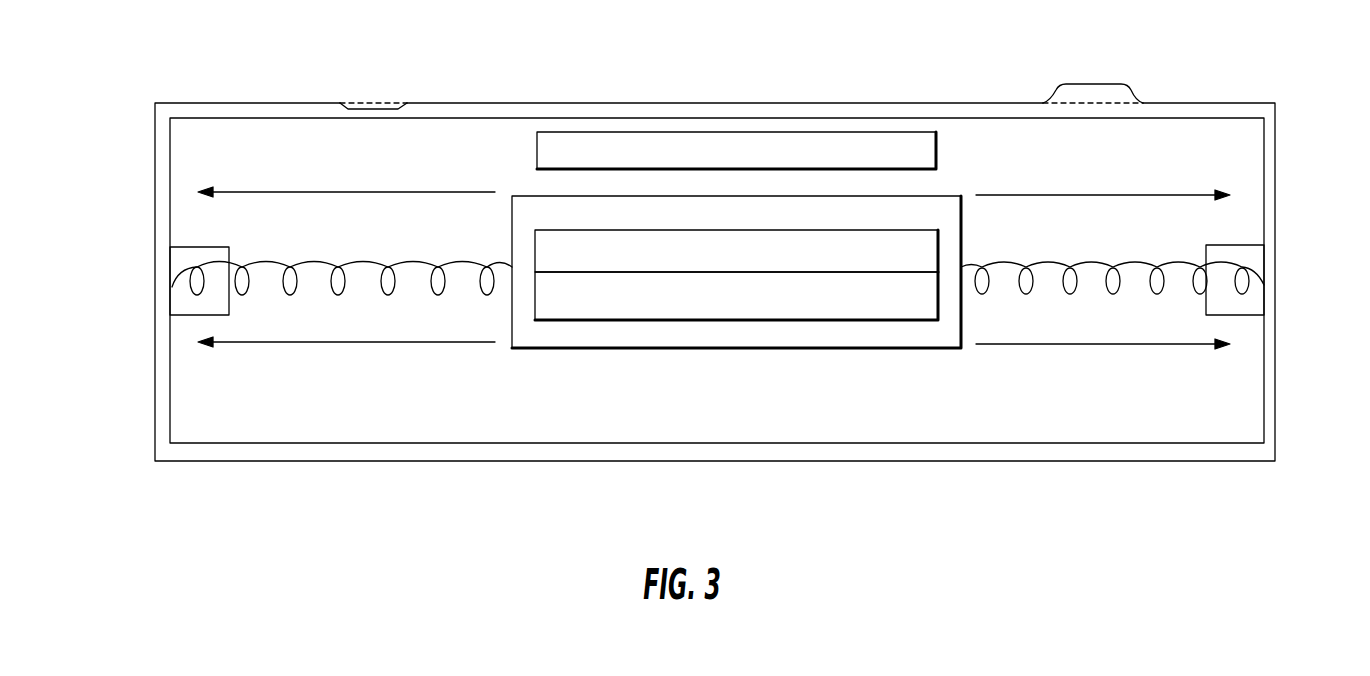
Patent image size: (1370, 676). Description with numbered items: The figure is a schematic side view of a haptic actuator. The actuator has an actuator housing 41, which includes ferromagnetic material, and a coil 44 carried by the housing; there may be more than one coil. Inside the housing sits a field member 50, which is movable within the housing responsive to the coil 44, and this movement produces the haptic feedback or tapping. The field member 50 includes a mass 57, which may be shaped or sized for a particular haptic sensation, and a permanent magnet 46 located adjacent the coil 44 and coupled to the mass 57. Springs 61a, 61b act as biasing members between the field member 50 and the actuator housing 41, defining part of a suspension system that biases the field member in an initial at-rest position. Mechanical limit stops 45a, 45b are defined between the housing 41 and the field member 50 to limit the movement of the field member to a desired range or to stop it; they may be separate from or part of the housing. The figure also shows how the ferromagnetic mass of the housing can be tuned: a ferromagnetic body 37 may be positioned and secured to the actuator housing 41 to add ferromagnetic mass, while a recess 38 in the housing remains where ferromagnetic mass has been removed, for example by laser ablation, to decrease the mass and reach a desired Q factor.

The actuator housing 41 is at (272, 110).
The recess 38 is at (370, 105).
The ferromagnetic body 37 is at (1085, 95).
The coil 44 is at (583, 145).
The field member 50 is at (595, 349).
The mass 57 is at (916, 262).
The permanent magnet 46 is at (862, 320).
The spring 61a is at (187, 268).
The spring 61b is at (1182, 267).
The mechanical limit stop 45a is at (178, 305).
The mechanical limit stop 45b is at (1253, 257).